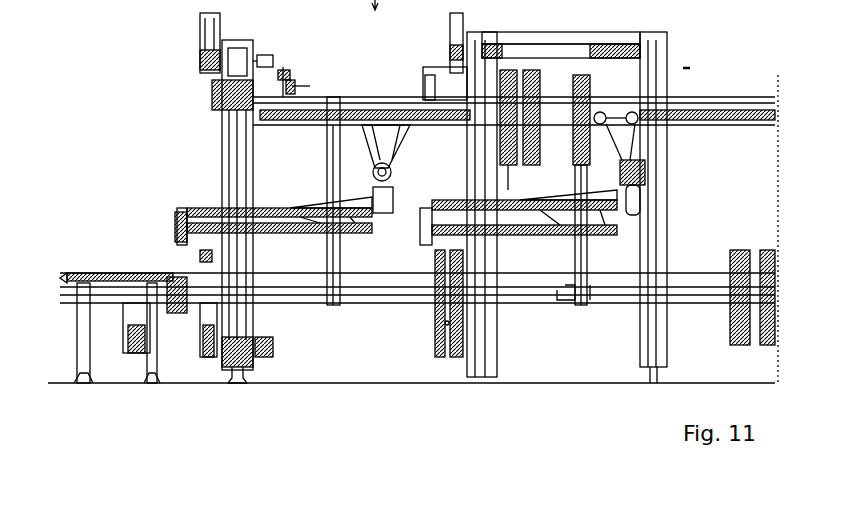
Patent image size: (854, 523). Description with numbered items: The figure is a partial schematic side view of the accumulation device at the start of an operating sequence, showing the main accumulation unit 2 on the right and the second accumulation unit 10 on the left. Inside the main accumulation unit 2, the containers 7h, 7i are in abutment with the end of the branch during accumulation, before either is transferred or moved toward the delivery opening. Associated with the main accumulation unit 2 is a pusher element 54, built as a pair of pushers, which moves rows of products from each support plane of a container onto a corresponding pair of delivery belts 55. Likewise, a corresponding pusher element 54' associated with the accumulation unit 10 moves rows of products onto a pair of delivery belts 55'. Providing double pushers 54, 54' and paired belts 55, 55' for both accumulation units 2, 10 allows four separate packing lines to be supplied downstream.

The main accumulation unit 2 is at (586, 350).
The accumulation unit 10 is at (367, 352).
The container element 7h is at (506, 165).
The container element 7i is at (533, 165).
The pusher element 54 is at (518, 332).
The pusher element 54' is at (274, 346).
The delivery belt 55 is at (424, 360).
The delivery belt 55' is at (135, 221).